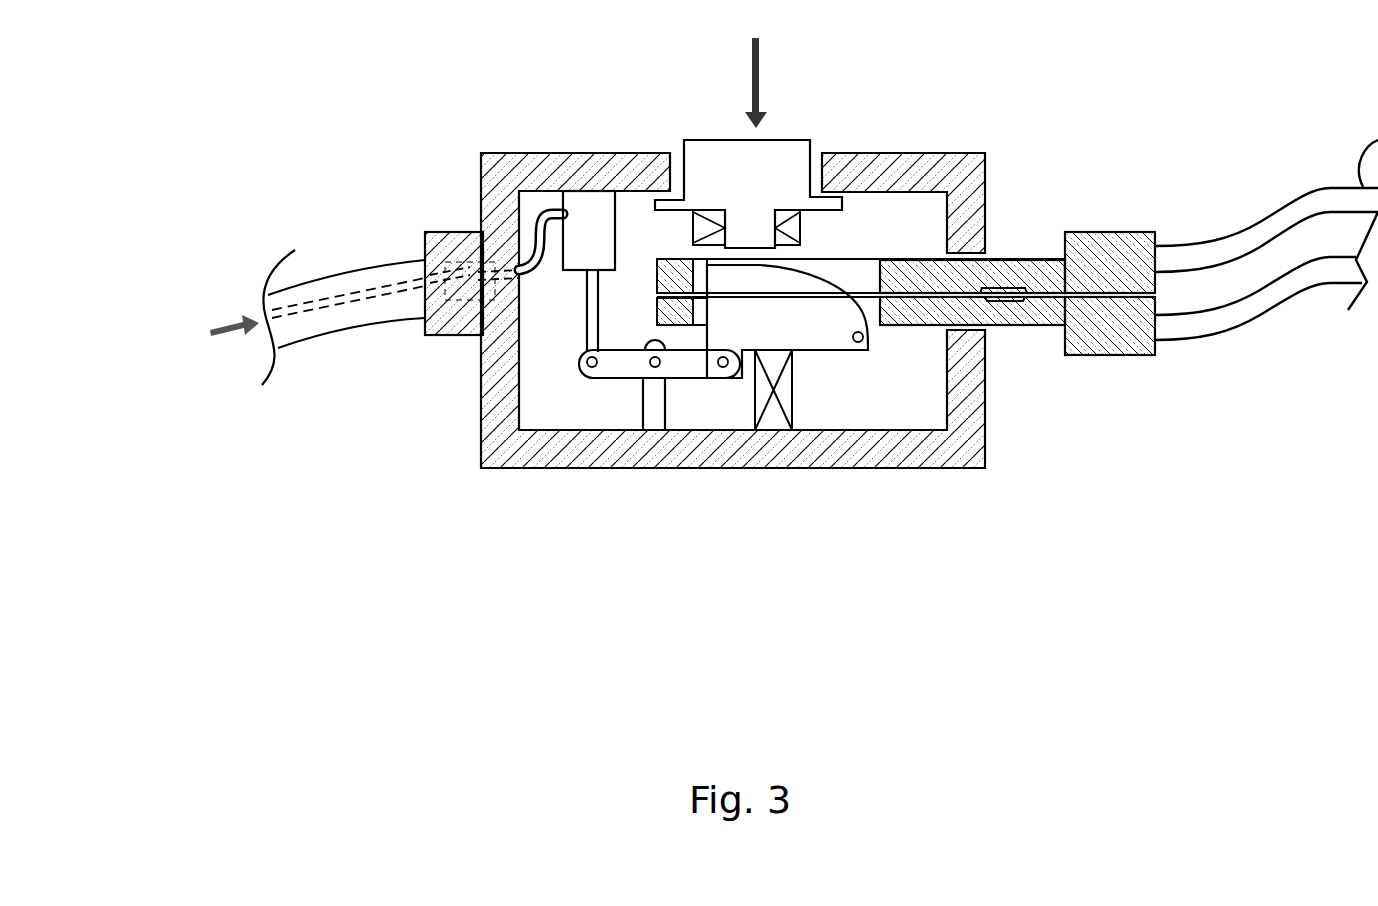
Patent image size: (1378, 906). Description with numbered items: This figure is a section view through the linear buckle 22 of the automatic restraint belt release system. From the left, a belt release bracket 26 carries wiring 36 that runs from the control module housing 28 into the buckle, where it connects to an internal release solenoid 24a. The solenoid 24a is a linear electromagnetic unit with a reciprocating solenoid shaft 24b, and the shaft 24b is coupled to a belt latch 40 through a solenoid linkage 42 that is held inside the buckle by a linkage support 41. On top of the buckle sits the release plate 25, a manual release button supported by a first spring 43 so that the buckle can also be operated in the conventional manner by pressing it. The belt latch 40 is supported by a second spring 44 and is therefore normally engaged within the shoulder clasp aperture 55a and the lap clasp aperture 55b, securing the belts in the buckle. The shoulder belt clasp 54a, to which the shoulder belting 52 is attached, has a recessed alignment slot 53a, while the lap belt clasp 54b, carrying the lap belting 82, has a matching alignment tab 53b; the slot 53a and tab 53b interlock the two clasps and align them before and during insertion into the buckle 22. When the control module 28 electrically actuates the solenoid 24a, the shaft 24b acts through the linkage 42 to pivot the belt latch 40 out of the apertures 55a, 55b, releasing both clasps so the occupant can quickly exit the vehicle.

The linear buckle 22 is at (327, 508).
The release solenoid 24a is at (588, 215).
The solenoid shaft 24b is at (588, 332).
The release plate 25 is at (770, 158).
The belt release bracket 26 is at (350, 270).
The control module housing 28 is at (182, 336).
The wiring 36 is at (547, 208).
The belt latch 40 is at (812, 327).
The linkage support 41 is at (655, 402).
The solenoid linkage 42 is at (690, 365).
The first spring 43 is at (790, 222).
The second spring 44 is at (780, 415).
The shoulder belting 52 is at (1240, 235).
The alignment slot 53a is at (1003, 288).
The alignment tab 53b is at (1000, 300).
The shoulder belt clasp 54a is at (668, 268).
The lap belt clasp 54b is at (665, 307).
The shoulder clasp aperture 55a is at (855, 273).
The lap clasp aperture 55b is at (873, 307).
The lap belting 82 is at (1242, 307).